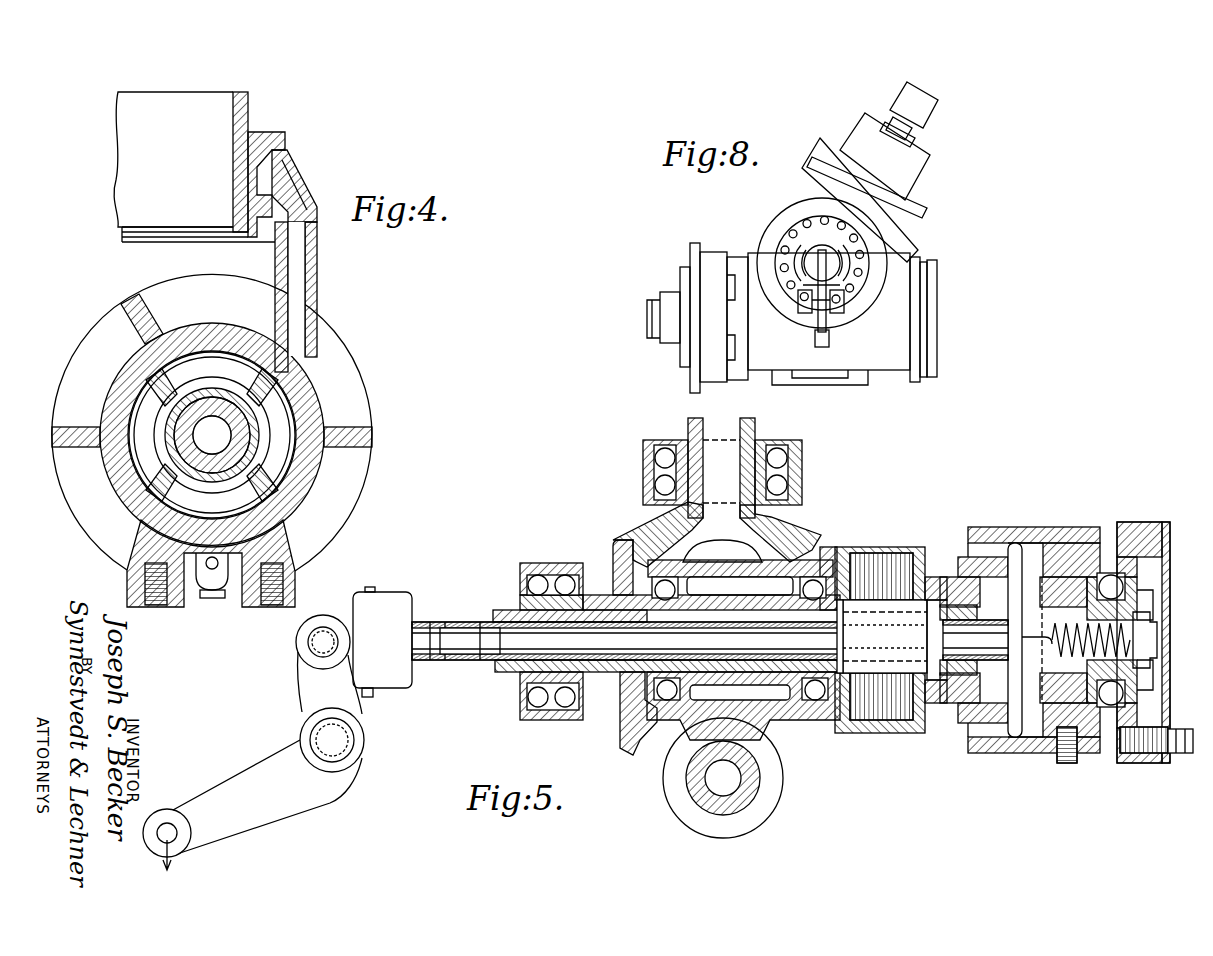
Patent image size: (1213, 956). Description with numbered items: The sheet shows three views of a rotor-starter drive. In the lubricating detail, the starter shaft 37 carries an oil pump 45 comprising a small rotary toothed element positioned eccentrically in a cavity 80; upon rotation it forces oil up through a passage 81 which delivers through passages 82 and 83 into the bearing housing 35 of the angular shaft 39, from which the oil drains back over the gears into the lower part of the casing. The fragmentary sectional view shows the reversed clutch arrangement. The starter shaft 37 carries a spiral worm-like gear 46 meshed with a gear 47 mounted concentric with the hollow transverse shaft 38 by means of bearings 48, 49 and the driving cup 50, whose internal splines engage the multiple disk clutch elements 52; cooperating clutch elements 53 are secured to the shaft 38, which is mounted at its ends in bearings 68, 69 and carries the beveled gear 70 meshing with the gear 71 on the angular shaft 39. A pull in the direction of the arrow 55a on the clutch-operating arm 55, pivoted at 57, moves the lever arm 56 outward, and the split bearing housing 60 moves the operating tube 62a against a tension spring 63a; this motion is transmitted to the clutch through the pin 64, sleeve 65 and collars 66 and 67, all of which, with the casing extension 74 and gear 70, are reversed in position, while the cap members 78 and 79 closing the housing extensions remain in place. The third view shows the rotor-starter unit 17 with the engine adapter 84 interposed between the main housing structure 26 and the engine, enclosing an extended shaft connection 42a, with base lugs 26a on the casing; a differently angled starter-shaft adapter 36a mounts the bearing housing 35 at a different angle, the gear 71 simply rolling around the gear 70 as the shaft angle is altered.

In FIG. 8, the rotor-starter unit 17 is at (813, 263).
In FIG. 8, the main housing structure 26 is at (829, 311).
In FIG. 8, the base lugs 26a is at (850, 378).
In FIG. 4, the bearing housing 35 is at (233, 108).
In FIG. 8, the bearing housing 35 is at (885, 156).
In FIG. 8, the starter-shaft adapter 36a is at (900, 220).
In FIG. 4, the starter shaft 37 is at (226, 432).
In FIG. 5, the starter shaft 37 is at (758, 787).
In FIG. 5, the transverse shaft 38 is at (627, 641).
In FIG. 8, the angular shaft 39 is at (925, 115).
In FIG. 8, the extended shaft connection 42a is at (665, 292).
In FIG. 4, the oil pump 45 is at (272, 478).
In FIG. 5, the spiral worm-like gear 46 is at (664, 782).
In FIG. 5, the gear 47 is at (770, 724).
In FIG. 5, the bearing 48 is at (838, 594).
In FIG. 5, the bearing 49 is at (663, 600).
In FIG. 5, the driving cup 50 is at (829, 548).
In FIG. 5, the multiple disk clutch elements 52 is at (892, 550).
In FIG. 5, the cooperating clutch elements 53 is at (868, 600).
In FIG. 8, the clutch-operating arm 55 is at (815, 325).
In FIG. 5, the clutch-operating arm 55 is at (245, 786).
In FIG. 5, the cable 55a is at (186, 857).
In FIG. 5, the lever arm 56 is at (313, 693).
In FIG. 5, the pivot 57 is at (342, 742).
In FIG. 5, the split bearing housing 60 is at (392, 686).
In FIG. 5, the operating tube 62a is at (485, 660).
In FIG. 5, the tension spring 63a is at (1150, 642).
In FIG. 5, the pin 64 is at (1008, 589).
In FIG. 5, the sleeve 65 is at (982, 555).
In FIG. 5, the collar 66 is at (960, 556).
In FIG. 5, the collar 67 is at (936, 575).
In FIG. 5, the bearing 68 is at (1112, 736).
In FIG. 5, the bearing 69 is at (560, 707).
In FIG. 5, the beveled gear 70 is at (615, 556).
In FIG. 5, the gear 71 is at (652, 522).
In FIG. 5, the casing extension 74 is at (1052, 543).
In FIG. 8, the cap member 78 is at (866, 270).
In FIG. 5, the cap member 79 is at (1165, 522).
In FIG. 4, the cavity 80 is at (318, 412).
In FIG. 4, the passage 81 is at (300, 302).
In FIG. 4, the passage 82 is at (293, 186).
In FIG. 4, the passage 83 is at (248, 178).
In FIG. 8, the engine adapter 84 is at (719, 318).